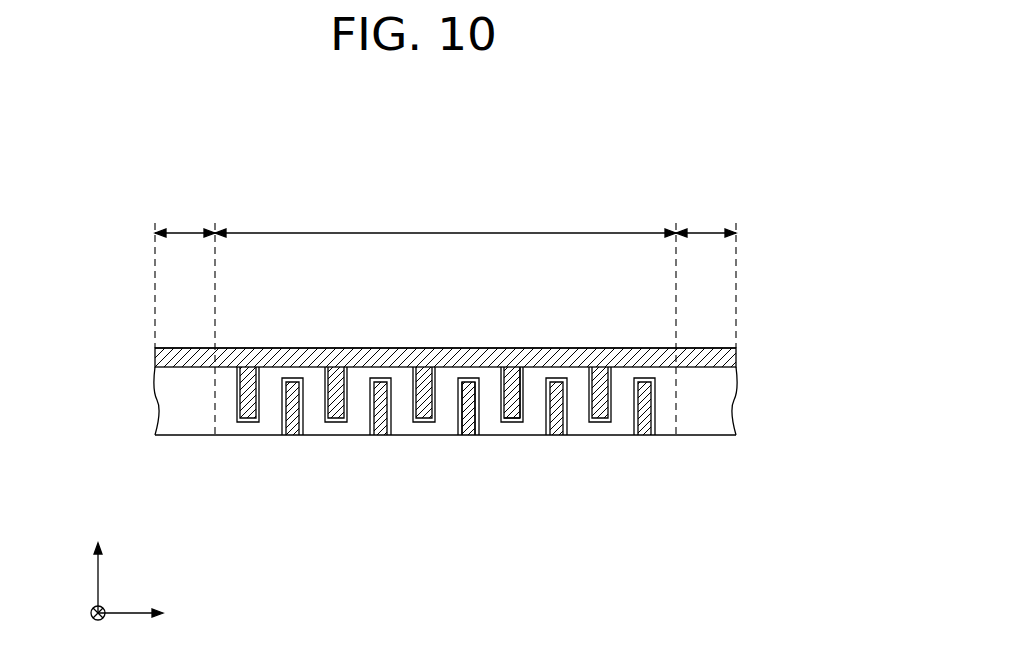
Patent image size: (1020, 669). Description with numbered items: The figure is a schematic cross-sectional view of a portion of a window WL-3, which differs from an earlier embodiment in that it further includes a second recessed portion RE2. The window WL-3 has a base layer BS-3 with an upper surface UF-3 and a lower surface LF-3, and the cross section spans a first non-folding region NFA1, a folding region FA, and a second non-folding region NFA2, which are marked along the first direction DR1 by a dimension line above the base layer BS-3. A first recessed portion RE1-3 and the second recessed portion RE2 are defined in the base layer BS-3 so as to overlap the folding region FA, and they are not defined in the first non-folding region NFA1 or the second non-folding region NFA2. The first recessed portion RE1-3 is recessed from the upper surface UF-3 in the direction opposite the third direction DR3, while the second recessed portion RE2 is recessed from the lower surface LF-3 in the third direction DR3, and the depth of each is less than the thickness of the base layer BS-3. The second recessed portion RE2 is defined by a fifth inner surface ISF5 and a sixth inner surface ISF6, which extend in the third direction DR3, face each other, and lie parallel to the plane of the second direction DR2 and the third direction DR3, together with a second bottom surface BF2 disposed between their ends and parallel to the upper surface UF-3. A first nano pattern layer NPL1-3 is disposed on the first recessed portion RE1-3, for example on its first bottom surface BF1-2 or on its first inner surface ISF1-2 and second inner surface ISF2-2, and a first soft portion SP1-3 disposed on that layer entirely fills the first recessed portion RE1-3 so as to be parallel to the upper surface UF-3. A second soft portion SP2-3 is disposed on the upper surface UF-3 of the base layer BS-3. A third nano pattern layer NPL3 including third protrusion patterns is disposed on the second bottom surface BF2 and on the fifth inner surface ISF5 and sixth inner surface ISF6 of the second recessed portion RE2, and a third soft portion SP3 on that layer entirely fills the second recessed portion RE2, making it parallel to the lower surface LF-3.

The window WL-3 is at (644, 165).
The first non-folding region NFA1 is at (185, 318).
The folding region FA is at (445, 219).
The second non-folding region NFA2 is at (706, 318).
The second soft portion SP2-3 is at (738, 357).
The upper surface UF-3 is at (176, 357).
The base layer BS-3 is at (726, 398).
The lower surface LF-3 is at (172, 435).
The first nano pattern layer NPL1-3 is at (261, 382).
The first soft portion SP1-3 is at (247, 412).
The third nano pattern layer NPL3 is at (300, 348).
The first inner surface ISF1-2 is at (503, 385).
The second inner surface ISF2-2 is at (518, 385).
The first bottom surface BF1-2 is at (519, 424).
The first recessed portion RE1-3 is at (593, 402).
The third soft portion SP3 is at (292, 427).
The second bottom surface BF2 is at (464, 377).
The fifth inner surface ISF5 is at (467, 413).
The sixth inner surface ISF6 is at (472, 413).
The second recessed portion RE2 is at (635, 417).
The first direction DR1 is at (150, 615).
The second direction DR2 is at (98, 629).
The third direction DR3 is at (98, 565).